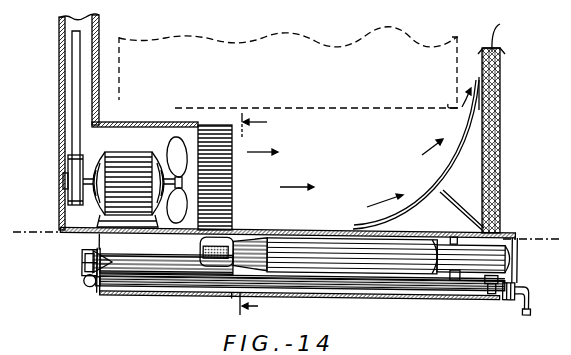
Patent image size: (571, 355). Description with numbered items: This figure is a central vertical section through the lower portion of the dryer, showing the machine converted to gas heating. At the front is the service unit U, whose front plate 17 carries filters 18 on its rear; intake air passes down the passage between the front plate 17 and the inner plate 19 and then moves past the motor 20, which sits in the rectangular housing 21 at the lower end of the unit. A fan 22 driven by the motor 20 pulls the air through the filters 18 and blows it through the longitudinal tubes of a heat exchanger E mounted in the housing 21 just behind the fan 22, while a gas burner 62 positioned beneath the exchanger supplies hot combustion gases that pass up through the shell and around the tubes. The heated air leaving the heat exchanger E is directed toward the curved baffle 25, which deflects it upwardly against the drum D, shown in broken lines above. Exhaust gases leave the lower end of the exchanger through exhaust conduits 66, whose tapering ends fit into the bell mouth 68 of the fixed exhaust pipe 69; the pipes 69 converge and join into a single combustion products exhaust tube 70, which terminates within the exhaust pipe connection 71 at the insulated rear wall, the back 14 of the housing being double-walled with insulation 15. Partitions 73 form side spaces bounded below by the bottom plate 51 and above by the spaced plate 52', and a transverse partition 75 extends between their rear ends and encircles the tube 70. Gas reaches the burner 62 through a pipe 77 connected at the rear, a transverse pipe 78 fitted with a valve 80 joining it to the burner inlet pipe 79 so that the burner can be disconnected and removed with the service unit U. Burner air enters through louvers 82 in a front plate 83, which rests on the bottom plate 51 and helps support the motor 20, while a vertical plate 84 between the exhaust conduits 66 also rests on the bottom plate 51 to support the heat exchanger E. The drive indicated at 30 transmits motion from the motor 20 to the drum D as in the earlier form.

The back 14 is at (500, 106).
The insulation 15 is at (379, 167).
The front plate 17 is at (58, 107).
The filters 18 is at (566, 149).
The inner plate 19 is at (98, 26).
The motor 20 is at (127, 150).
The rectangular housing 21 is at (187, 107).
The fan 22 is at (172, 158).
The curved baffle 25 is at (455, 170).
The belt and pulley 30 is at (79, 148).
The bottom plate 51 is at (425, 299).
The spaced plate 52' is at (352, 239).
The gas burner 62 is at (200, 256).
The exhaust conduits 66 is at (200, 244).
The bell mouth 68 is at (294, 214).
The fixed exhaust pipe 69 is at (410, 250).
The combustion products exhaust tube 70 is at (513, 255).
The exhaust pipe connection 71 is at (505, 231).
The partitions 73 is at (366, 298).
The transverse partition 75 is at (461, 299).
The pipe 77 is at (156, 290).
The transverse pipe 78 is at (83, 283).
The burner inlet pipe 79 is at (130, 256).
The valve 80 is at (82, 265).
The louvers 82 is at (93, 236).
The front plate 83 is at (104, 254).
The vertical plate 84 is at (229, 297).
The drum D is at (119, 75).
The heat exchanger E is at (232, 184).
The service unit U is at (58, 42).